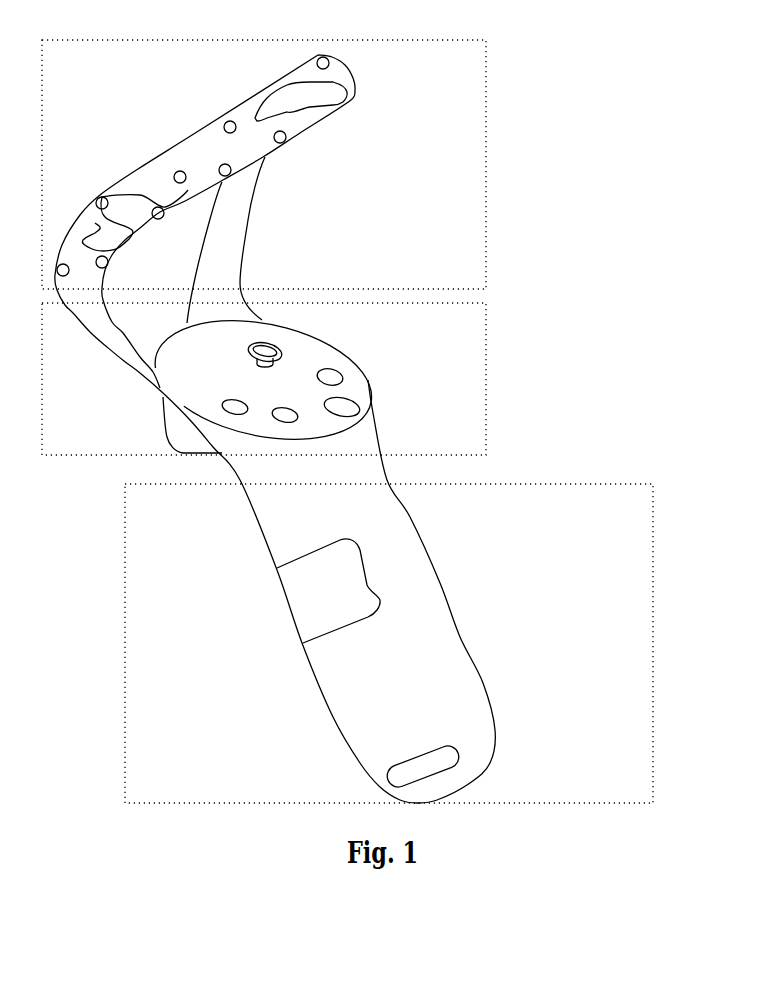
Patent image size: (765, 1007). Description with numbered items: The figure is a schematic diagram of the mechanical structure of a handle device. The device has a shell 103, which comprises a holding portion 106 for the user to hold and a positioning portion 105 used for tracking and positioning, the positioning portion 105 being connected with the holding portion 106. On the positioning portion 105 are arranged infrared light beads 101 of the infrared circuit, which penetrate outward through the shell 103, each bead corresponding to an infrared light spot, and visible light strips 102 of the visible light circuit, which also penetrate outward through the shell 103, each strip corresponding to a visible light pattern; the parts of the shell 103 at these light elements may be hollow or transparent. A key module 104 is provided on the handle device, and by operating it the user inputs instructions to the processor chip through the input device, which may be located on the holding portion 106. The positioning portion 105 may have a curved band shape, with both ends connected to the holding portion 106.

The infrared light bead 101 is at (230, 127).
The visible light strip 102 is at (307, 90).
The shell 103 is at (457, 620).
The key module 104 is at (486, 373).
The positioning portion 105 is at (288, 260).
The holding portion 106 is at (413, 591).